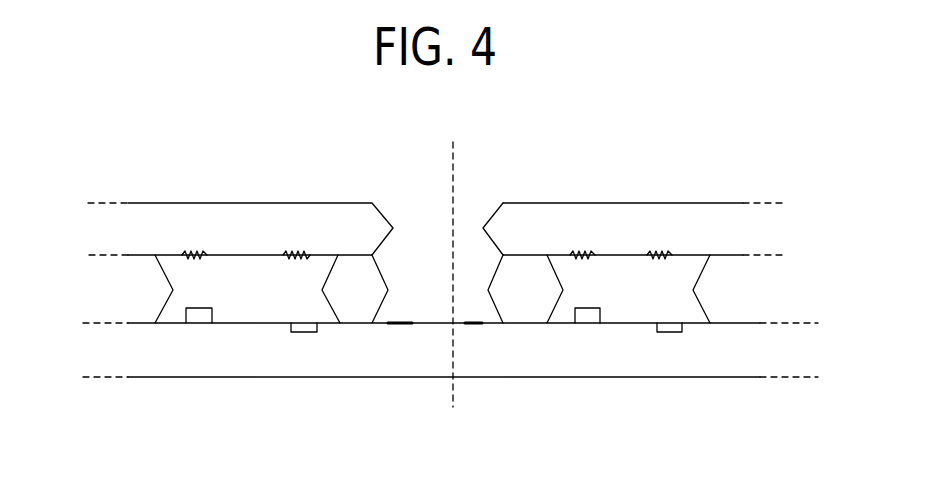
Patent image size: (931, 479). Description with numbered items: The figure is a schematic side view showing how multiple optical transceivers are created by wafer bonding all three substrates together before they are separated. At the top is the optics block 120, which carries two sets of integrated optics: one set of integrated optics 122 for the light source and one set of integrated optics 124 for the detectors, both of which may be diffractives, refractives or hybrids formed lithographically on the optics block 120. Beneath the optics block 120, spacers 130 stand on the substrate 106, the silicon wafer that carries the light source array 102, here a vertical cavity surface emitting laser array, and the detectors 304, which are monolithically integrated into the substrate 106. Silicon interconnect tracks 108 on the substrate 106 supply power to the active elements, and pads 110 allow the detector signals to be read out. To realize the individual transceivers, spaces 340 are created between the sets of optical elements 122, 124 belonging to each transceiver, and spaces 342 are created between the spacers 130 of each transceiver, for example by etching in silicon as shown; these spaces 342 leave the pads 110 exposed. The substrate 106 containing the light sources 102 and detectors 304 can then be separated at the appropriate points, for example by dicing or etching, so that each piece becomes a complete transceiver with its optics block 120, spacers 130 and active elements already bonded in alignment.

The optics block 120 is at (355, 203).
The integrated optics for the light source 122 is at (188, 255).
The integrated optics for the detectors 124 is at (290, 255).
The spaces between the sets of optical elements 340 is at (473, 199).
The spacers 130 is at (143, 308).
The spaces between the spacers 342 is at (480, 308).
The pads 110 is at (428, 323).
The silicon interconnect tracks 108 is at (398, 323).
The light source array 102 is at (195, 323).
The detectors 304 is at (307, 332).
The substrate 106 is at (730, 377).